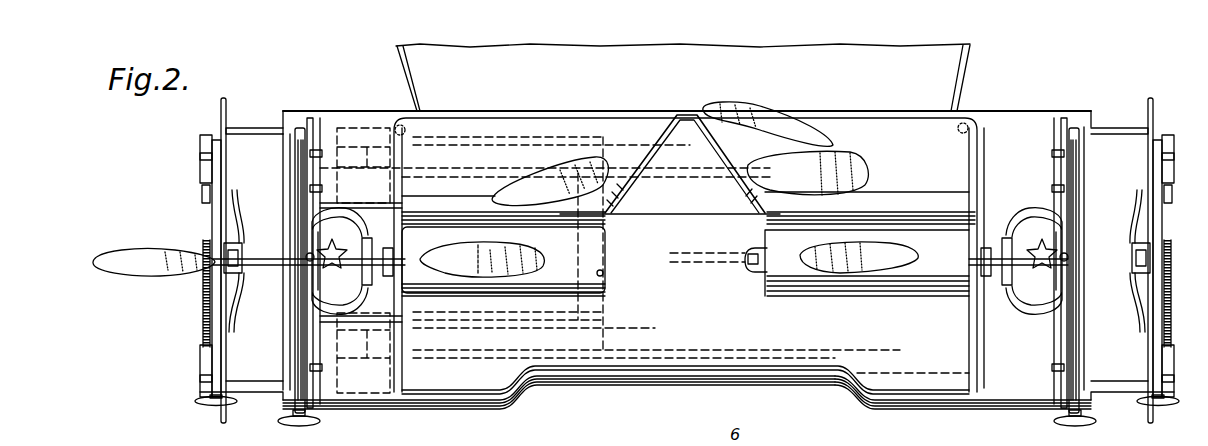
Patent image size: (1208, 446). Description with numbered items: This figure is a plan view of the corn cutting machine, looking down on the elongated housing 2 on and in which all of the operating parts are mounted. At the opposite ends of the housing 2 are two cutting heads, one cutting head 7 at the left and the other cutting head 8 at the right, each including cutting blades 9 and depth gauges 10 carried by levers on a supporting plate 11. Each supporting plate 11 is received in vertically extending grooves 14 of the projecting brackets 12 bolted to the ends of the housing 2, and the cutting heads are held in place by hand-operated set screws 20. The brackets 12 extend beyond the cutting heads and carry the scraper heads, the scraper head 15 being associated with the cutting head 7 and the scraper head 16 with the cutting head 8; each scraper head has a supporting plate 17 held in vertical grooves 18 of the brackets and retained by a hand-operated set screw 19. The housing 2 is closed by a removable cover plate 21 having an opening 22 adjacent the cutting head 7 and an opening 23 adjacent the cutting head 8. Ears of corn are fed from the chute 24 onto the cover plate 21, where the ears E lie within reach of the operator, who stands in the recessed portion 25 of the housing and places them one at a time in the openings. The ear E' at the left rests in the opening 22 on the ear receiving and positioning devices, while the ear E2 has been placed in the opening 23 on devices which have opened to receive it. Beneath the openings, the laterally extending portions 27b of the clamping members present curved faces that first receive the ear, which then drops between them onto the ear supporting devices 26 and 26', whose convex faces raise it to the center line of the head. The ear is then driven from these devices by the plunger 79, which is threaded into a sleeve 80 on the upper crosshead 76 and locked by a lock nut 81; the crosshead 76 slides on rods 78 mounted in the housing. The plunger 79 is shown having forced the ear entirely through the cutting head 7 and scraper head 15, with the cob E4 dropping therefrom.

The housing 2 is at (356, 124).
The cutting head 7 is at (314, 275).
The cutting head 8 is at (1058, 246).
The cutting blades 9 is at (336, 250).
The depth gauges 10 is at (365, 248).
The supporting plate 11 is at (298, 132).
The projecting brackets 12 is at (240, 132).
The vertically extending grooves 14 is at (309, 128).
The scraper head 15 is at (213, 296).
The scraper head 16 is at (1140, 276).
The supporting plate 17 is at (200, 146).
The vertical grooves 18 is at (218, 138).
The hand-operated set screw 19 is at (208, 410).
The hand-operated set screws 20 is at (305, 428).
The removable cover plate 21 is at (672, 336).
The opening 22 is at (603, 276).
The opening 23 is at (765, 283).
The chute 24 is at (948, 83).
The recessed portion 25 is at (816, 380).
The ear supporting device 26 is at (870, 267).
The ear supporting member 26' is at (741, 243).
The laterally extending portions 27b is at (449, 232).
The upper crosshead 76 is at (585, 310).
The rods 78 is at (623, 148).
The plunger 79 is at (270, 262).
The sleeve 80 is at (386, 276).
The lock nut 81 is at (480, 278).
The ears E is at (680, 154).
The ear E' is at (496, 252).
The ear E2 is at (900, 262).
The cob E4 is at (183, 240).